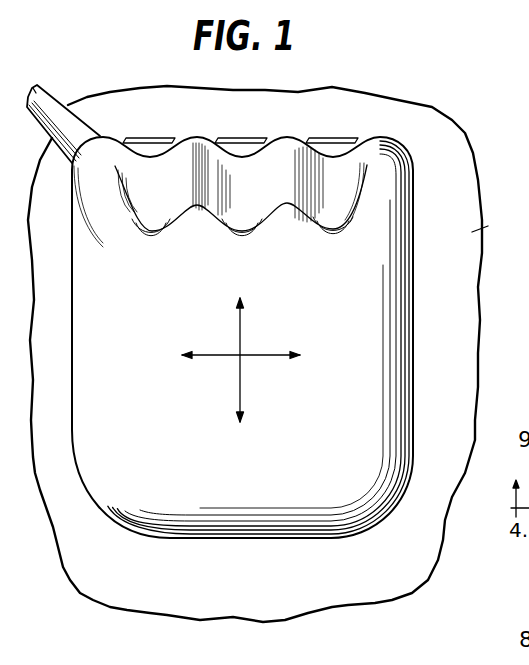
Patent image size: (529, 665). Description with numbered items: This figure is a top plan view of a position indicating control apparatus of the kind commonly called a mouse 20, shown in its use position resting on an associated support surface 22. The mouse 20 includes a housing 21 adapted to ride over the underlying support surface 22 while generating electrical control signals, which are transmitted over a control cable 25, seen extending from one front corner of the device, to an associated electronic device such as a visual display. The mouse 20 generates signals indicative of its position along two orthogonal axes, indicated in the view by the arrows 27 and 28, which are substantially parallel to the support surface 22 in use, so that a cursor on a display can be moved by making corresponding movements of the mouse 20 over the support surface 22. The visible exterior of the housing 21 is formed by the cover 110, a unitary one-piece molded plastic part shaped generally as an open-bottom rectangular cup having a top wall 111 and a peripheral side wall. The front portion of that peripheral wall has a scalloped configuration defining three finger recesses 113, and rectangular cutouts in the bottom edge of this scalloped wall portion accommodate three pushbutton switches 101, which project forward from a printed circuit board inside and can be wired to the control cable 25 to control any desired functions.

The mouse 20 is at (449, 163).
The housing 21 is at (90, 512).
The support surface 22 is at (465, 240).
The control cable 25 is at (45, 100).
The arrow 27 is at (213, 353).
The arrow 28 is at (243, 384).
The pushbutton switches 101 is at (235, 136).
The cover 110 is at (190, 487).
The top wall 111 is at (348, 365).
The finger recesses 113 is at (247, 217).